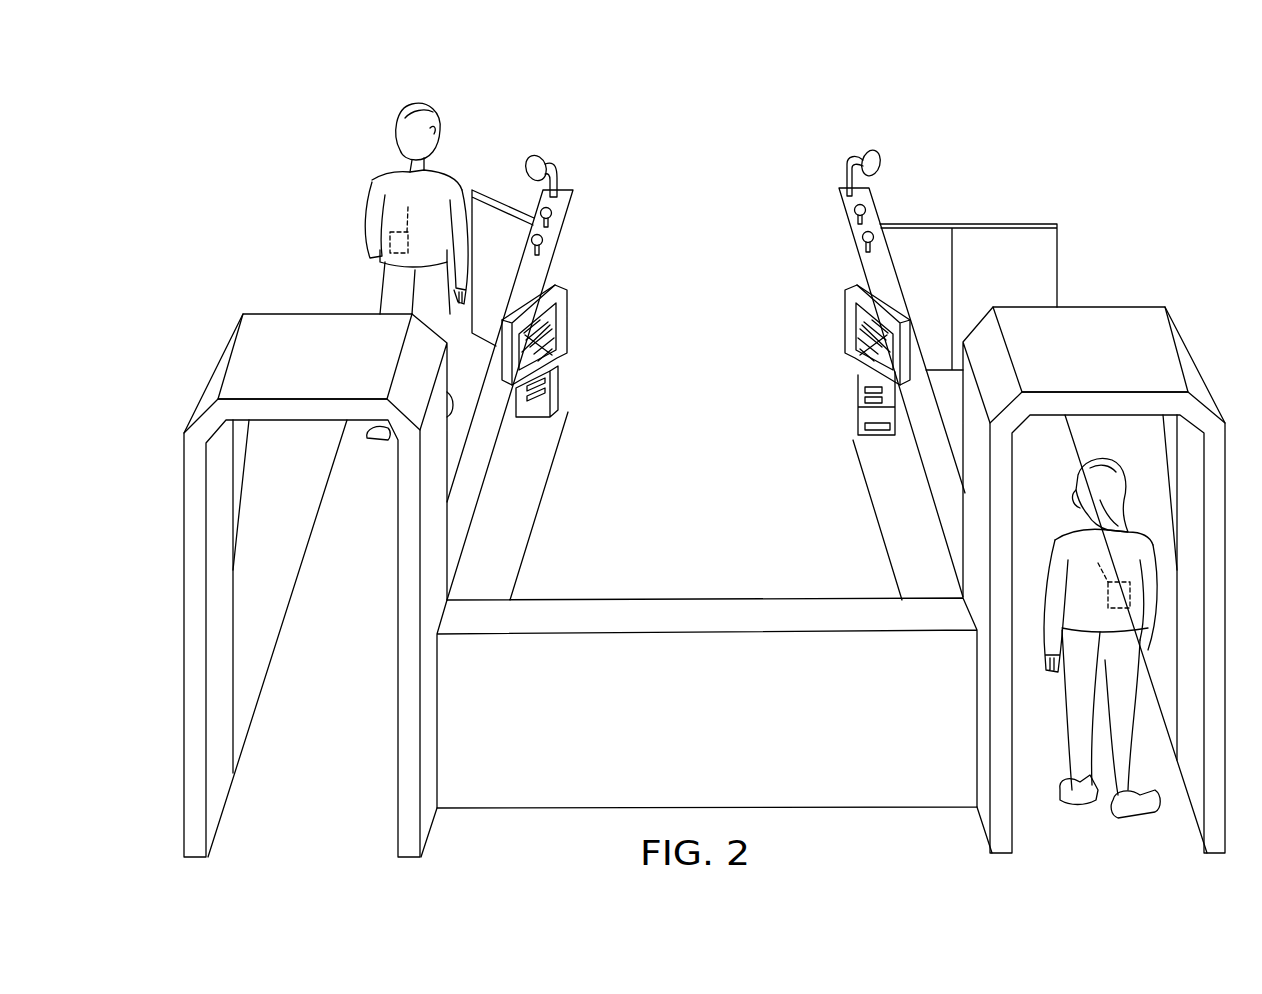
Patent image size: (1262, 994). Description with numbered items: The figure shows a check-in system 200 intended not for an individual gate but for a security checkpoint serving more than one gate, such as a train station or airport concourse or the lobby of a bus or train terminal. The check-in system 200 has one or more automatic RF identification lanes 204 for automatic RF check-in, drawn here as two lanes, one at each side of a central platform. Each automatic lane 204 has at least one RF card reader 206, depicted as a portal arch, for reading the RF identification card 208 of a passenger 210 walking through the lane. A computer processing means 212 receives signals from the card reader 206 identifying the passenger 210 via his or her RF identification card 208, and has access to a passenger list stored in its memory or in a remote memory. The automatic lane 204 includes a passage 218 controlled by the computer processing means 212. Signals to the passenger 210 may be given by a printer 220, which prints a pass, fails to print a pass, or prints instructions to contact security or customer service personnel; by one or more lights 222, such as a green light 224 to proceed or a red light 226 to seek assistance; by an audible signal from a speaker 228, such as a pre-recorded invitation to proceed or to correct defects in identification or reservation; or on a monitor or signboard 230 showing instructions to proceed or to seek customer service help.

The check-in system 200 is at (1130, 136).
The automatic RF identification lane 204 is at (358, 696).
The RF card reader 206 is at (226, 322).
The RF identification card 208 is at (760, 391).
The passenger 210 is at (394, 116).
The computer processing means 212 is at (566, 367).
The passage 218 is at (328, 809).
The printer 220 is at (532, 437).
The lights 222 is at (524, 211).
The green light 224 is at (541, 244).
The red light 226 is at (551, 216).
The speaker 228 is at (537, 155).
The monitor or signboard 230 is at (553, 320).